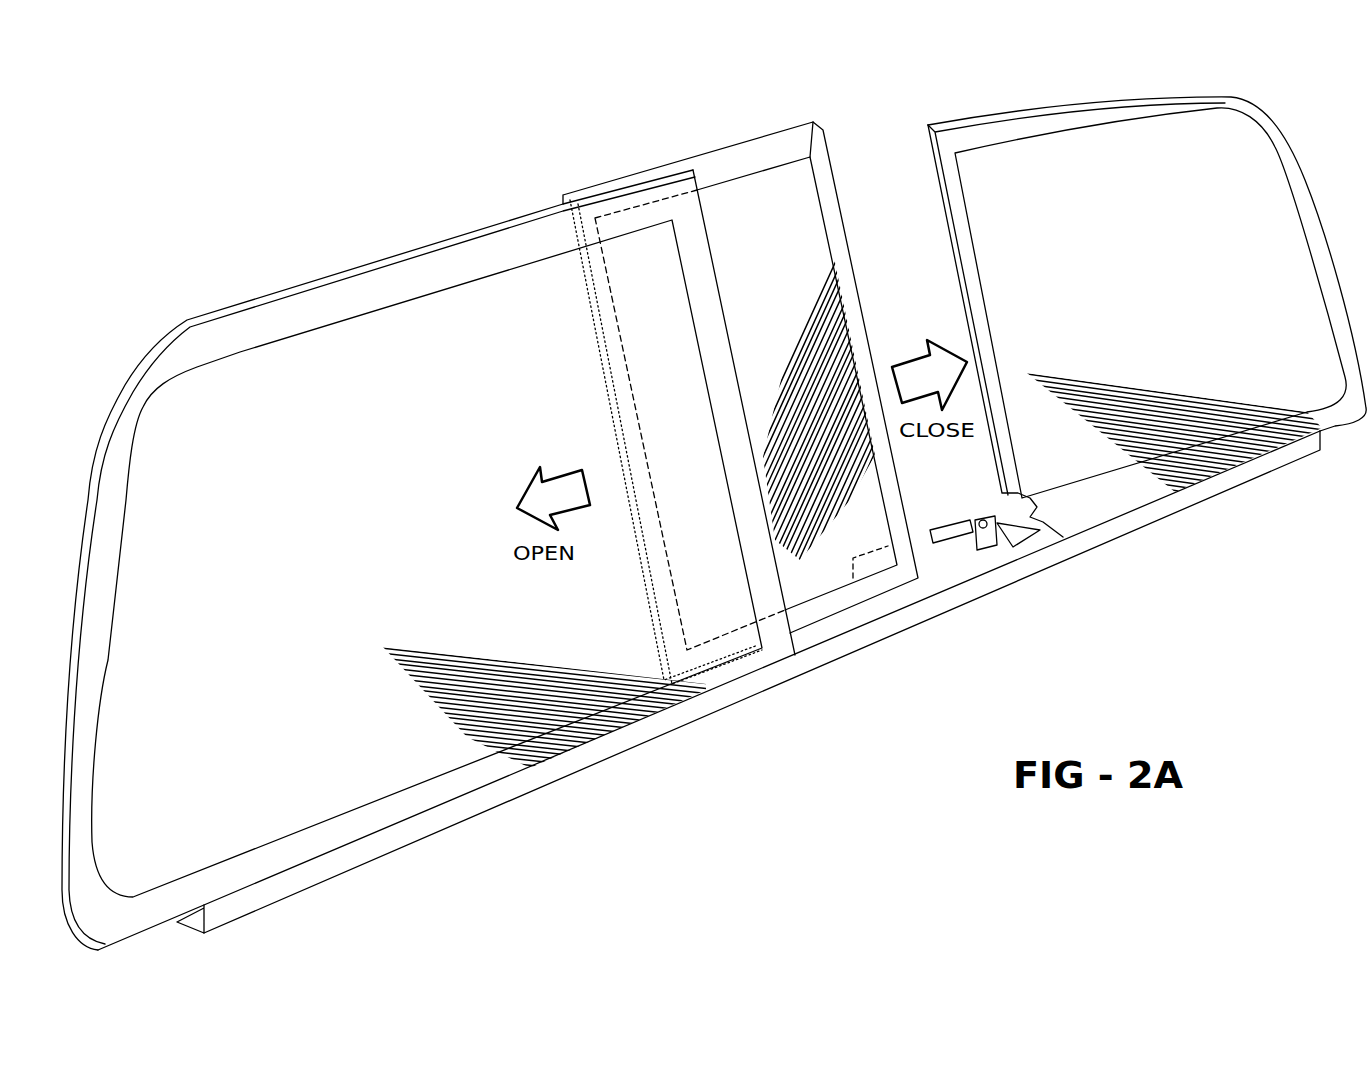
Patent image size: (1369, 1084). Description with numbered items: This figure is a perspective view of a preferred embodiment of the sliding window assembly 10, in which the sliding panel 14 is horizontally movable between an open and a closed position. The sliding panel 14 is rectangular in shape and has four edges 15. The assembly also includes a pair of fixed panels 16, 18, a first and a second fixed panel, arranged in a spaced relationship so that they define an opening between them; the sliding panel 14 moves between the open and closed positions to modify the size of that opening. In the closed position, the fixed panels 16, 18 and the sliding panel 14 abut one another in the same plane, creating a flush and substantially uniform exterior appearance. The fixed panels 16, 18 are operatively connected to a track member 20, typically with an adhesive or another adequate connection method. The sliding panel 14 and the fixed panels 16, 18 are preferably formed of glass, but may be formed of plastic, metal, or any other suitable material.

The sliding window assembly 10 is at (362, 220).
The sliding panel 14 is at (772, 193).
The edge 15 is at (598, 345).
The fixed panel 16 is at (167, 542).
The fixed panel 18 is at (1252, 200).
The track member 20 is at (960, 597).